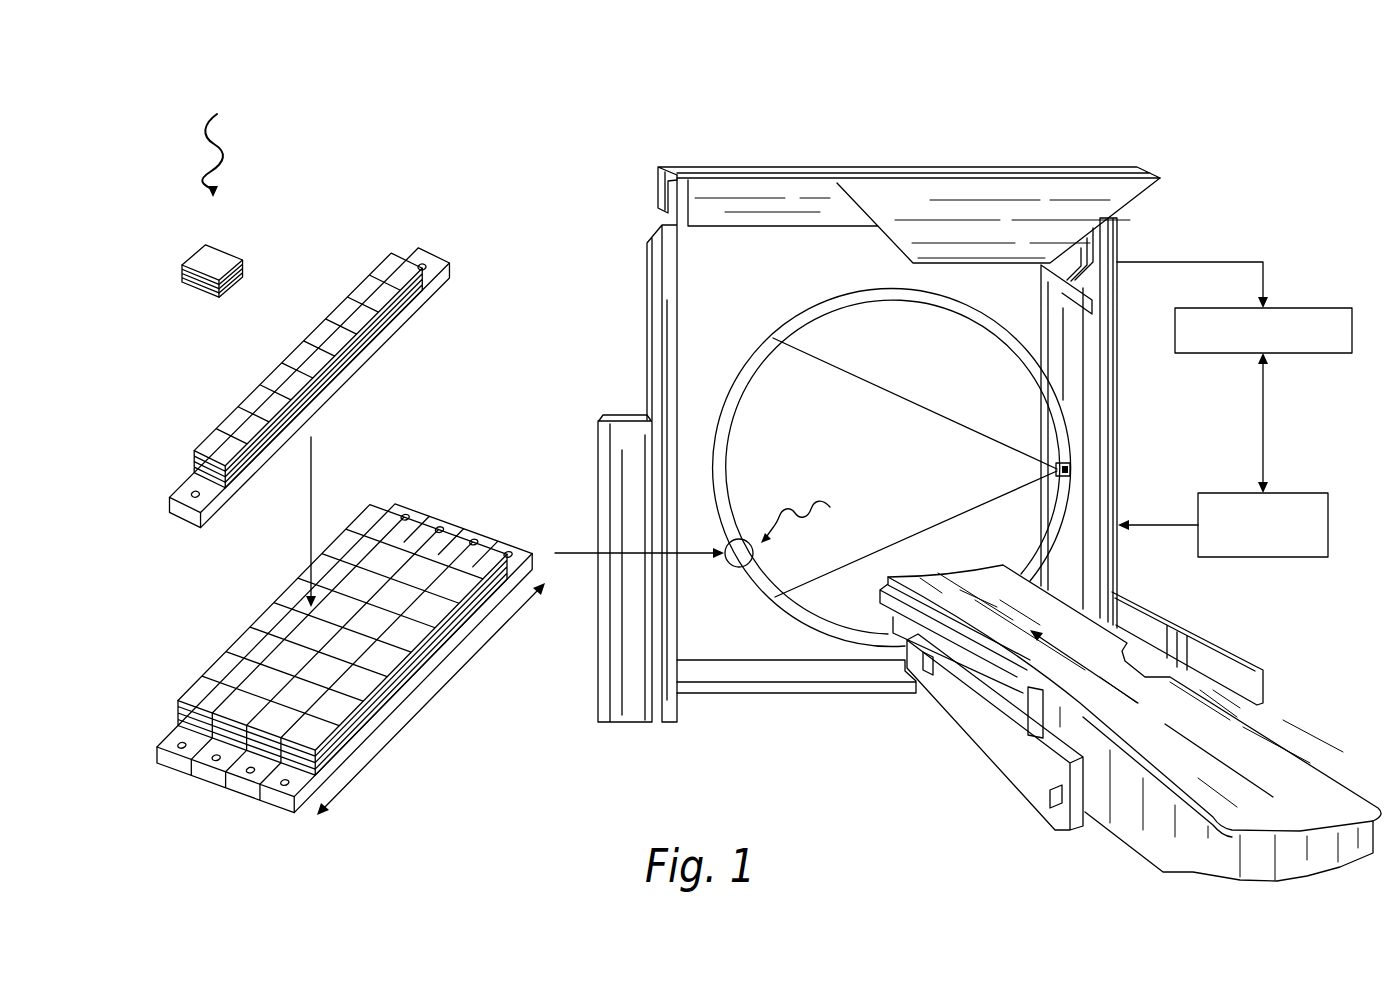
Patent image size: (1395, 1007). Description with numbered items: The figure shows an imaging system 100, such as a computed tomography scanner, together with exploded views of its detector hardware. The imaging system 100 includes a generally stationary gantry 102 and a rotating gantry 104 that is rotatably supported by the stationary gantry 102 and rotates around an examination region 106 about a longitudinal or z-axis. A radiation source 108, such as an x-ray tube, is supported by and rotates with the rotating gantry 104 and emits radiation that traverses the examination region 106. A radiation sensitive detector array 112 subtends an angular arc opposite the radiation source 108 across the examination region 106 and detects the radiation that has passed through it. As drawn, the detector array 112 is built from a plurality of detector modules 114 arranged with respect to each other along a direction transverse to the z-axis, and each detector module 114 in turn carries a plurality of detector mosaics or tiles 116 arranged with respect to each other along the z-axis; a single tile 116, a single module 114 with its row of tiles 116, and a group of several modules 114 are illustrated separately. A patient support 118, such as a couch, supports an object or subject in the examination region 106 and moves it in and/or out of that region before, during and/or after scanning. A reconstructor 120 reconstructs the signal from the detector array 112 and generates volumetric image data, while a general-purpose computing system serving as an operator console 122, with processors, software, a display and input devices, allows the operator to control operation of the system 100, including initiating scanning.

The imaging system 100 is at (676, 148).
The stationary gantry 102 is at (664, 308).
The rotating gantry 104 is at (845, 298).
The examination region 106 is at (898, 466).
The radiation source 108 is at (1072, 476).
The radiation sensitive detector array 112 is at (758, 354).
The detector module 114 is at (433, 262).
The detector tile 116 is at (222, 250).
The patient support 118 is at (1297, 775).
The reconstructor 120 is at (1290, 308).
The operator console 122 is at (1296, 493).